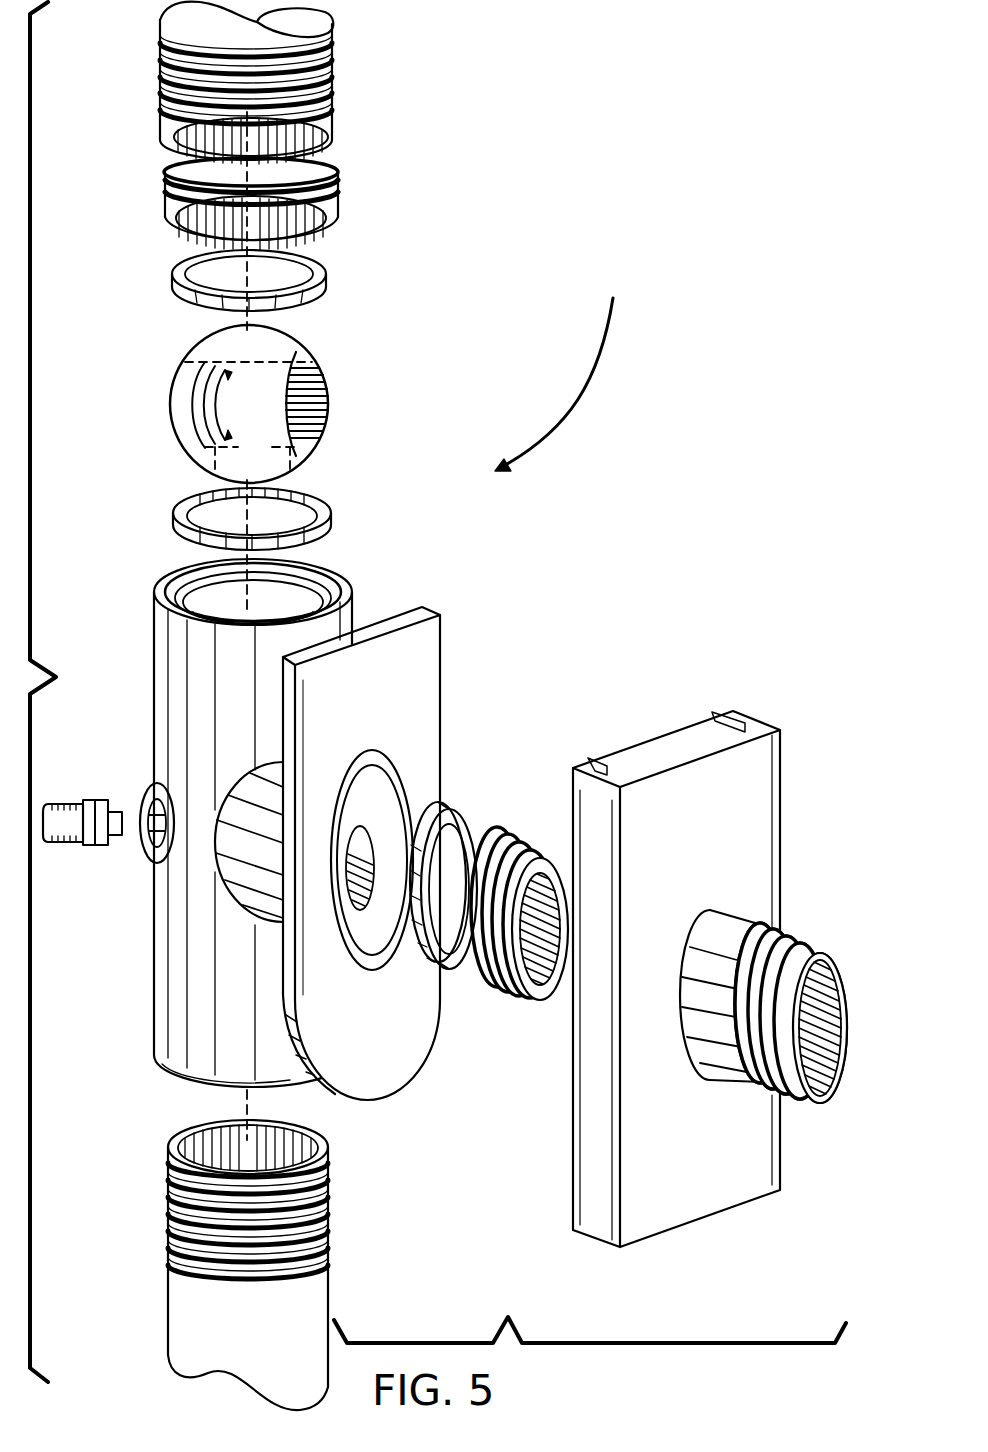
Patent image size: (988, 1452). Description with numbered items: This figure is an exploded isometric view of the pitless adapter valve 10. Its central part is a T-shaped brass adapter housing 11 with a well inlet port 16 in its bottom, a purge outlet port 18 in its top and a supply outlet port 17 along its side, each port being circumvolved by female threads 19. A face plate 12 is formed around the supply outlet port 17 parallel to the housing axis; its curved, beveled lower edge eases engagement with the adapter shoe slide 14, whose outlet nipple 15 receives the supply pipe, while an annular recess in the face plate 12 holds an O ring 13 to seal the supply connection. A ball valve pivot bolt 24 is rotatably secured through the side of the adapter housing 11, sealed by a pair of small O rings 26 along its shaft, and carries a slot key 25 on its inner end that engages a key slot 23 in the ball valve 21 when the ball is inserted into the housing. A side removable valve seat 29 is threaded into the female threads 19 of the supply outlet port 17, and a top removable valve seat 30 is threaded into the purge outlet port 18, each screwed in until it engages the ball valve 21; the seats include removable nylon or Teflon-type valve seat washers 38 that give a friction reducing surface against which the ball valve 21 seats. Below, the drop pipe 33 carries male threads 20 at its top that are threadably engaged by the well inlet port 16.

The pitless adapter valve 10 is at (564, 364).
The adapter housing 11 is at (154, 626).
The face plate 12 is at (418, 670).
The O ring 13 is at (378, 753).
The adapter shoe slide 14 is at (758, 720).
The outlet nipple 15 is at (740, 923).
The well inlet port 16 is at (192, 1090).
The supply outlet port 17 is at (407, 947).
The purge outlet port 18 is at (297, 587).
The female threads 19 is at (205, 592).
The male threads 20 is at (337, 112).
The ball valve 21 is at (180, 382).
The key slot 23 is at (213, 410).
The ball valve pivot bolt 24 is at (86, 803).
The slot key 25 is at (140, 812).
The O rings 26 is at (148, 840).
The side removable valve seat 29 is at (563, 776).
The top removable valve seat 30 is at (165, 183).
The drop pipe 33 is at (168, 1278).
The valve seat washer 38 is at (328, 272).